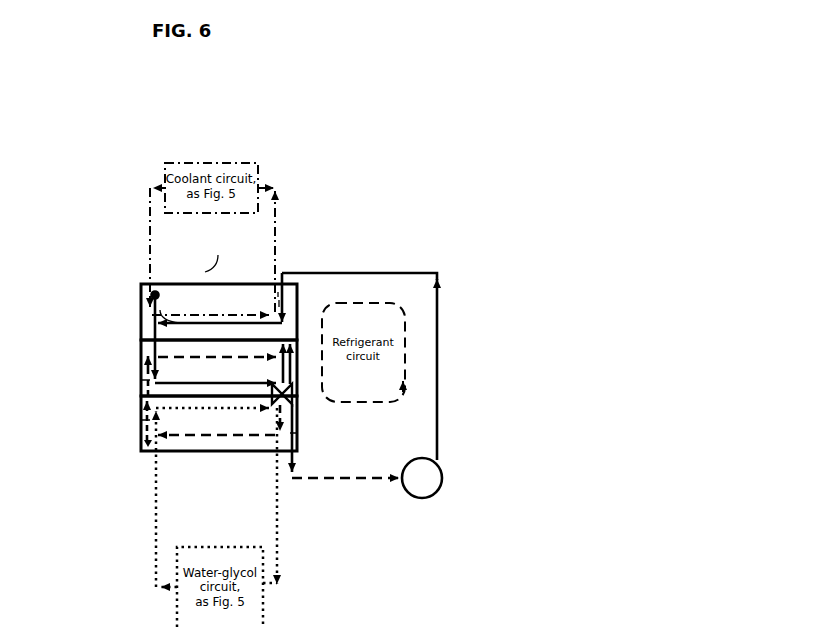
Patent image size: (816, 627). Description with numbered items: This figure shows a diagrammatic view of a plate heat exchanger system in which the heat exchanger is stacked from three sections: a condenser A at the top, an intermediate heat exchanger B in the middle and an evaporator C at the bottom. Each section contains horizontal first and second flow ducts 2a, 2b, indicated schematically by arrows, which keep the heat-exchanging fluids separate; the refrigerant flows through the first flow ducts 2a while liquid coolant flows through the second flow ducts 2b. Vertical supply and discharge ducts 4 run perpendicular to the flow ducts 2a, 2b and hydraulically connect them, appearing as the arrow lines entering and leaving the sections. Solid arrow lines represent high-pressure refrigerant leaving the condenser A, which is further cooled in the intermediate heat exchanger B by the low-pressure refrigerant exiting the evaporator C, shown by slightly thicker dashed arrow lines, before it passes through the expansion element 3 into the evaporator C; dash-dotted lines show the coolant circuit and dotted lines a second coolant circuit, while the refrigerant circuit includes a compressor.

The condenser A is at (133, 296).
The intermediate heat exchanger B is at (142, 368).
The evaporator C is at (142, 428).
The first flow ducts 2a is at (160, 310).
The second flow ducts 2b is at (192, 315).
The expansion element 3 is at (290, 374).
The supply and discharge ducts 4 is at (278, 292).